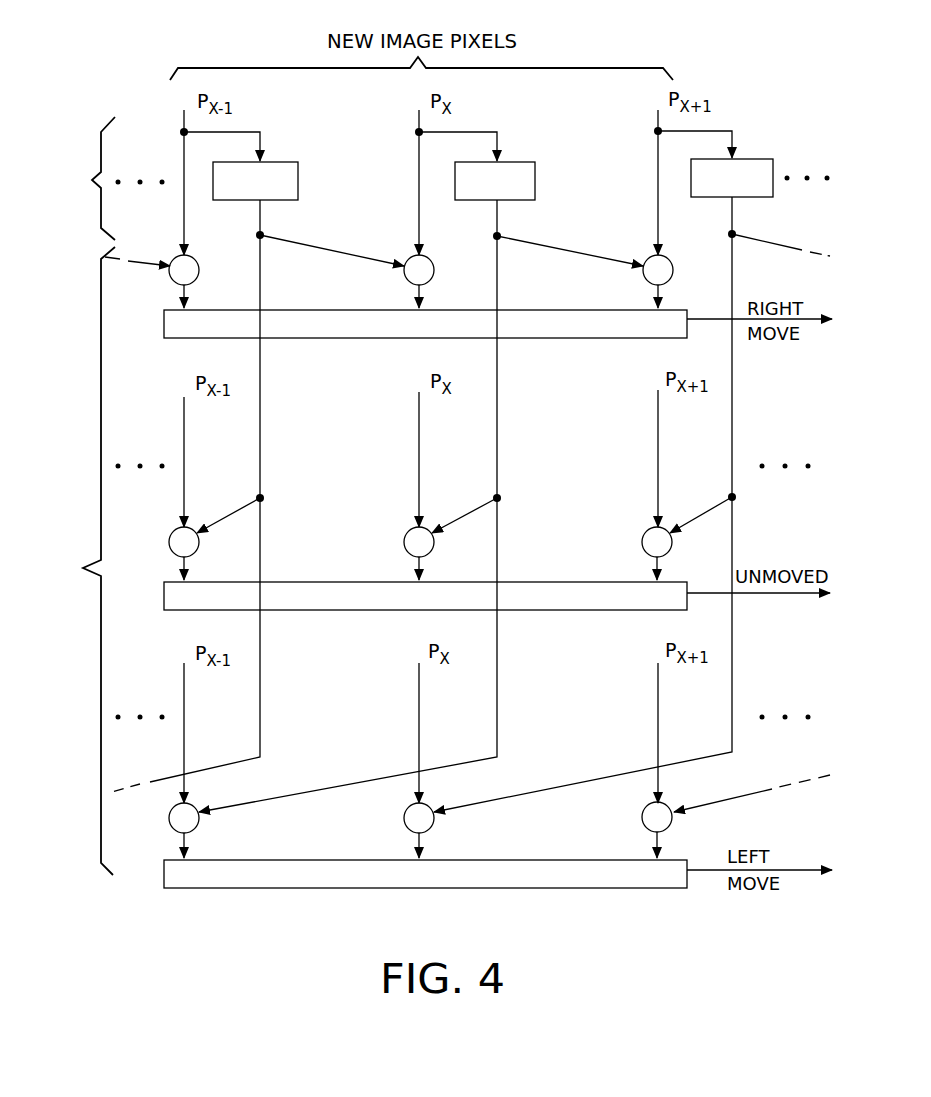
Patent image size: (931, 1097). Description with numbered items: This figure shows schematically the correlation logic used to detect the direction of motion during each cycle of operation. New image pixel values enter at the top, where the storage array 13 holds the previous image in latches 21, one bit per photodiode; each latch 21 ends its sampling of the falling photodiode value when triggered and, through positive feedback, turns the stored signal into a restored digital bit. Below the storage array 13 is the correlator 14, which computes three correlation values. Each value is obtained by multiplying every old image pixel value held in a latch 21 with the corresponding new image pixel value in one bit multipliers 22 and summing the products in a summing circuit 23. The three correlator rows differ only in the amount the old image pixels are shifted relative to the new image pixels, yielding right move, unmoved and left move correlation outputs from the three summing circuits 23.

The storage array 13 is at (87, 178).
The correlator 14 is at (84, 561).
The latch 21 is at (298, 185).
The one bit multiplier 22 is at (199, 270).
The summing circuit 23 is at (579, 338).